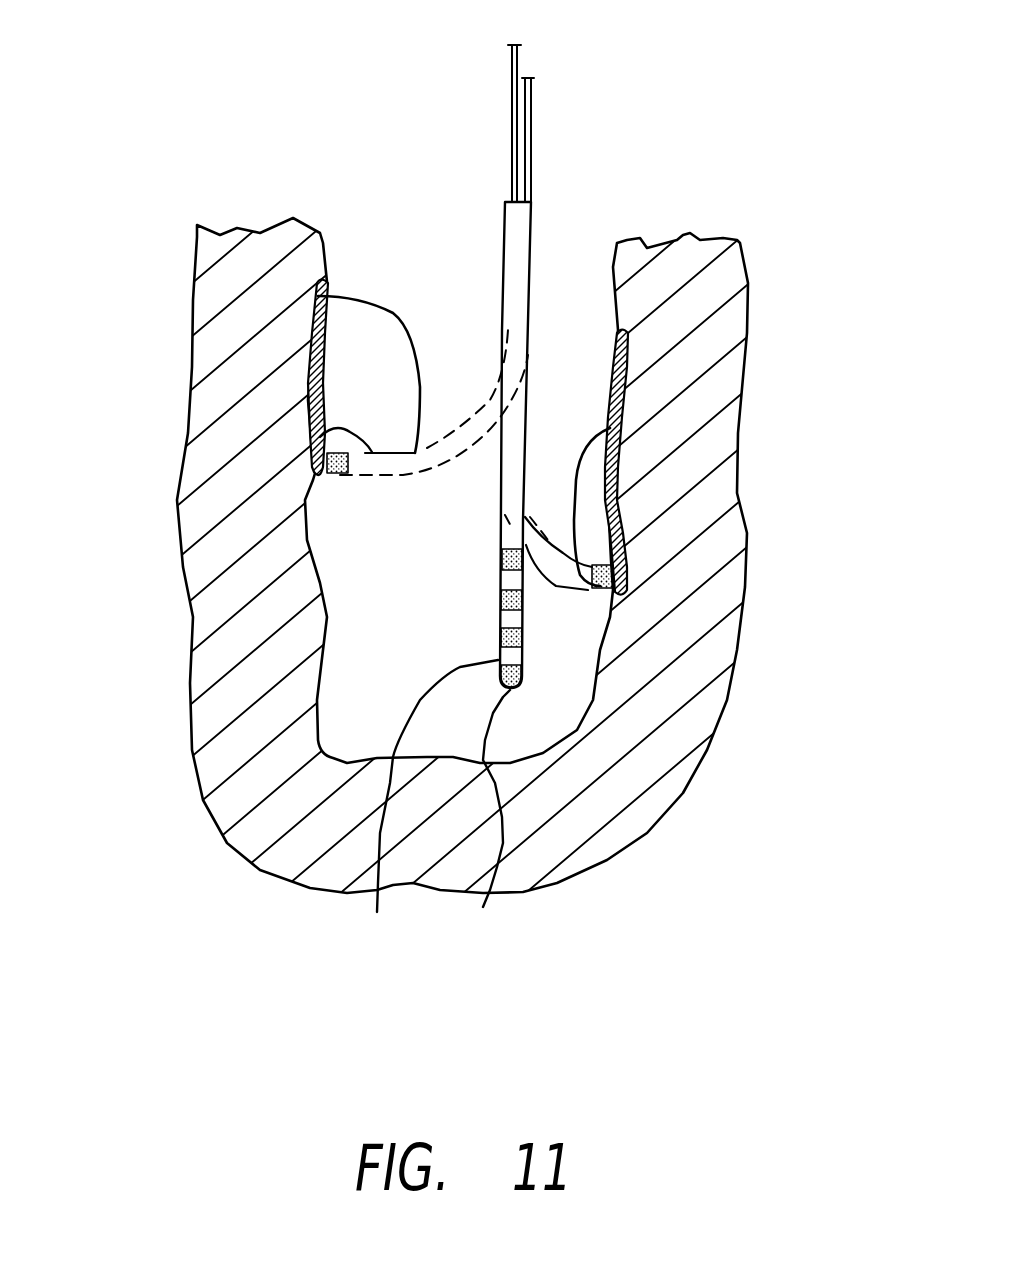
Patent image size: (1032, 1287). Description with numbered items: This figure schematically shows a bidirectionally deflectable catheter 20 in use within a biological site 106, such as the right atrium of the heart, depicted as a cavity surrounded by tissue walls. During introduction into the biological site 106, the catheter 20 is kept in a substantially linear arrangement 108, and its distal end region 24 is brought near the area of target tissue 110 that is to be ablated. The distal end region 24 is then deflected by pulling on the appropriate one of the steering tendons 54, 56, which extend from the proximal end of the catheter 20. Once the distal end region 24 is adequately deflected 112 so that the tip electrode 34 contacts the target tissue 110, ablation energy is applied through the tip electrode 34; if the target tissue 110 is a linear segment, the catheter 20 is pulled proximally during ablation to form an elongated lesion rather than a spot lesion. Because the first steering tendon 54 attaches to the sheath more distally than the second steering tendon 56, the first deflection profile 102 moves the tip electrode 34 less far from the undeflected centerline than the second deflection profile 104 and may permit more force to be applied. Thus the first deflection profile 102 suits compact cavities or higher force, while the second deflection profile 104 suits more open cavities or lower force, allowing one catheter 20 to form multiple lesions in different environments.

The catheter 20 is at (419, 546).
The distal end region 24 is at (429, 805).
The tip electrode 34 is at (486, 820).
The first steering tendon 54 is at (533, 142).
The second steering tendon 56 is at (510, 77).
The first deflection profile 102 is at (610, 428).
The second deflection profile 104 is at (318, 296).
The biological site 106 is at (687, 866).
The substantially linear arrangement 108 is at (500, 632).
The target tissue 110 is at (307, 352).
The deflected state 112 is at (318, 437).